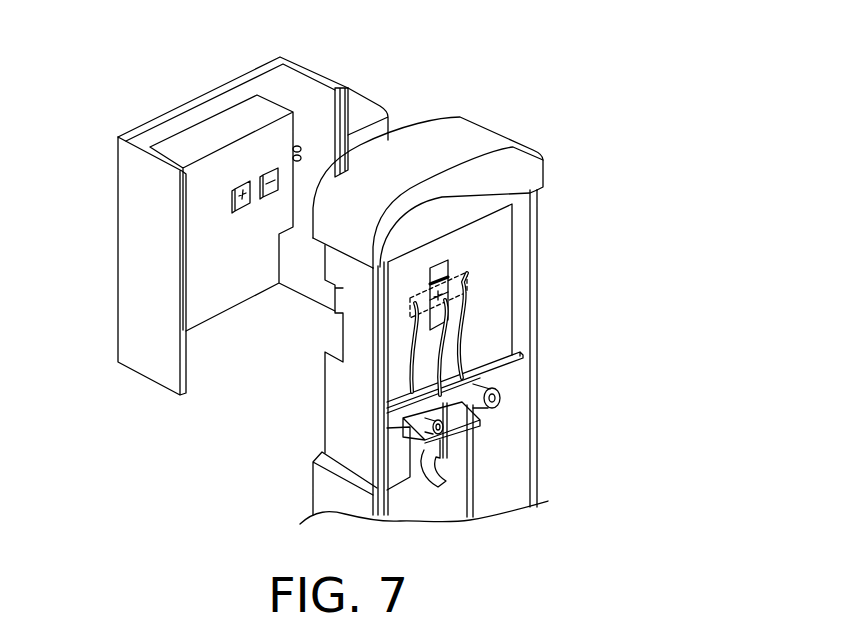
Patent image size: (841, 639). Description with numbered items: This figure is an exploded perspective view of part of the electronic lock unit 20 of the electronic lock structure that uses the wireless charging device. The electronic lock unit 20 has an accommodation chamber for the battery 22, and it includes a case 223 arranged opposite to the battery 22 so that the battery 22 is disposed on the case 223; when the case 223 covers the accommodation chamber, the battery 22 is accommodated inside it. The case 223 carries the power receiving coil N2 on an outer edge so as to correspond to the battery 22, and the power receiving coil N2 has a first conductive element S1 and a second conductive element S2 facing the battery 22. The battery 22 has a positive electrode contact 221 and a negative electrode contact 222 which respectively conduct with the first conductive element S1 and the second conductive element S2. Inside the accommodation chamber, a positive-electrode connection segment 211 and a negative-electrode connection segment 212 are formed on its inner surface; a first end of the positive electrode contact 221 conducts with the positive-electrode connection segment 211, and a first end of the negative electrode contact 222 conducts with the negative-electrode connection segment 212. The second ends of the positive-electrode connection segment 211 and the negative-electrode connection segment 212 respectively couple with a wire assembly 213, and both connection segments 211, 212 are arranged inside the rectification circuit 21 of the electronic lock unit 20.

The electronic lock unit 20 is at (535, 175).
The rectification circuit 21 is at (485, 362).
The positive-electrode connection segment 211 is at (463, 283).
The negative-electrode connection segment 212 is at (455, 297).
The wire assembly 213 is at (462, 330).
The battery 22 is at (217, 185).
The positive electrode contact 221 is at (238, 209).
The negative electrode contact 222 is at (260, 173).
The case 223 is at (192, 96).
The first conductive element S1 is at (297, 147).
The second conductive element S2 is at (322, 147).
The power receiving coil N2 is at (358, 112).